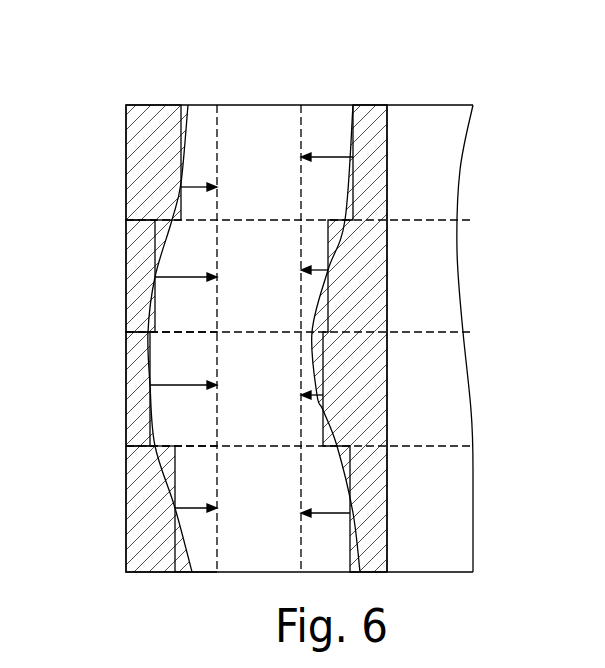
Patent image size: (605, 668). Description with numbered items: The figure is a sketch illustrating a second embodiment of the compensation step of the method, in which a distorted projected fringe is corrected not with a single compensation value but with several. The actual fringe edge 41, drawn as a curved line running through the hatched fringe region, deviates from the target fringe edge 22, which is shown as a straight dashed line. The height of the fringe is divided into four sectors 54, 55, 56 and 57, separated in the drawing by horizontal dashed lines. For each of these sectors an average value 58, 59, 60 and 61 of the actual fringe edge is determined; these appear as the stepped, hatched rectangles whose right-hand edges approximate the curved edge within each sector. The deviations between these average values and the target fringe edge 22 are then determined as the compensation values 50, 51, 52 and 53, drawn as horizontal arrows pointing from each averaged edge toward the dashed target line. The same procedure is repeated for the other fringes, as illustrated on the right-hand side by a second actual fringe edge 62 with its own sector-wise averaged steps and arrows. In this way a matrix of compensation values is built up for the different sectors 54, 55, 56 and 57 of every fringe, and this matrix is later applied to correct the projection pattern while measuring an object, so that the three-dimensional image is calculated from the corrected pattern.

The target fringe edge 22 is at (302, 128).
The actual fringe edge 41 is at (192, 125).
The first sector 54 is at (252, 125).
The second actual fringe edge 62 is at (367, 135).
The average value 58 is at (181, 120).
The average value 59 is at (155, 243).
The average value 60 is at (148, 343).
The average value 61 is at (172, 458).
The compensation value 50 is at (197, 182).
The compensation value 51 is at (195, 268).
The compensation value 52 is at (197, 383).
The compensation value 53 is at (197, 505).
The second sector 55 is at (195, 312).
The third sector 56 is at (195, 433).
The fourth sector 57 is at (195, 563).